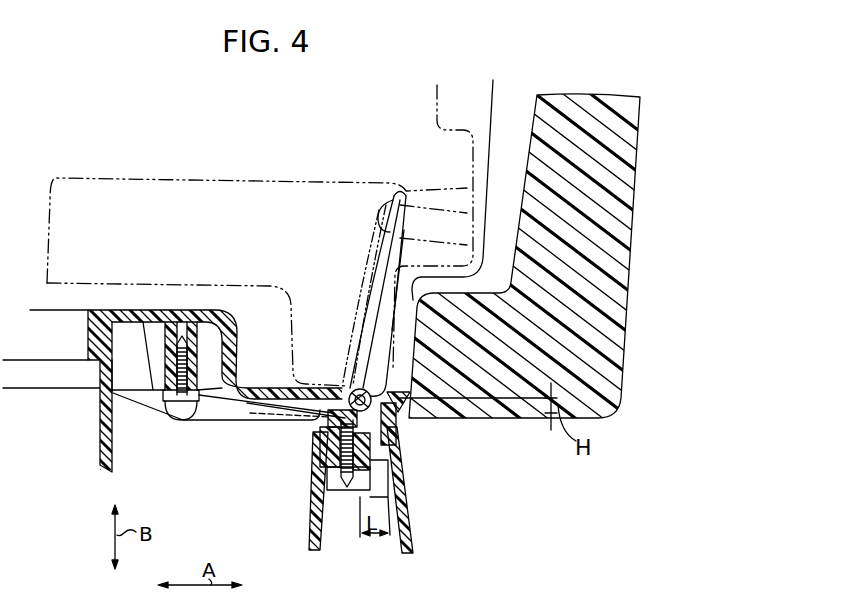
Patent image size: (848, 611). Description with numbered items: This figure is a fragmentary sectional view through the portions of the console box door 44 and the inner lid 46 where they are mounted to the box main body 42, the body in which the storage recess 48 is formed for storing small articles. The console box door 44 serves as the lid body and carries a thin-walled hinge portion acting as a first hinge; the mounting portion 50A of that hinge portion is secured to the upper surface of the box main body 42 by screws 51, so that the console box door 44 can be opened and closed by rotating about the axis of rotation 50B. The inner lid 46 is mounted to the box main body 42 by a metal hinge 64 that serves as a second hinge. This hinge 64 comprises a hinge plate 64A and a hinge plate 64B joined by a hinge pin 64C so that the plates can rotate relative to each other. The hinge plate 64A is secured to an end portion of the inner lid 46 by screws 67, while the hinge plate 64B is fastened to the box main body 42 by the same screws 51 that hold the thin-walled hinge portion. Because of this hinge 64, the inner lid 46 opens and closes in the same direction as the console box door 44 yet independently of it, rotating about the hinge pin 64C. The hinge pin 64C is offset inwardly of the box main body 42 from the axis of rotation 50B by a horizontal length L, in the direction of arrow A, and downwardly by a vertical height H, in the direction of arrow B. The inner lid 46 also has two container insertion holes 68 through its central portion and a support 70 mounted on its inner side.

The box main body 42 is at (412, 509).
The console box door 44 is at (176, 183).
The inner lid 46 is at (444, 77).
The storage recess 48 is at (297, 485).
The mounting portion 50A is at (307, 440).
The axis of rotation 50B is at (410, 422).
The screws 51 is at (306, 517).
The hinge 64 is at (361, 259).
The hinge plate 64A is at (220, 408).
The hinge plate 64B is at (345, 390).
The hinge pin 64C is at (385, 355).
The screws 67 is at (372, 208).
The container insertion holes 68 is at (88, 312).
The support 70 is at (94, 440).